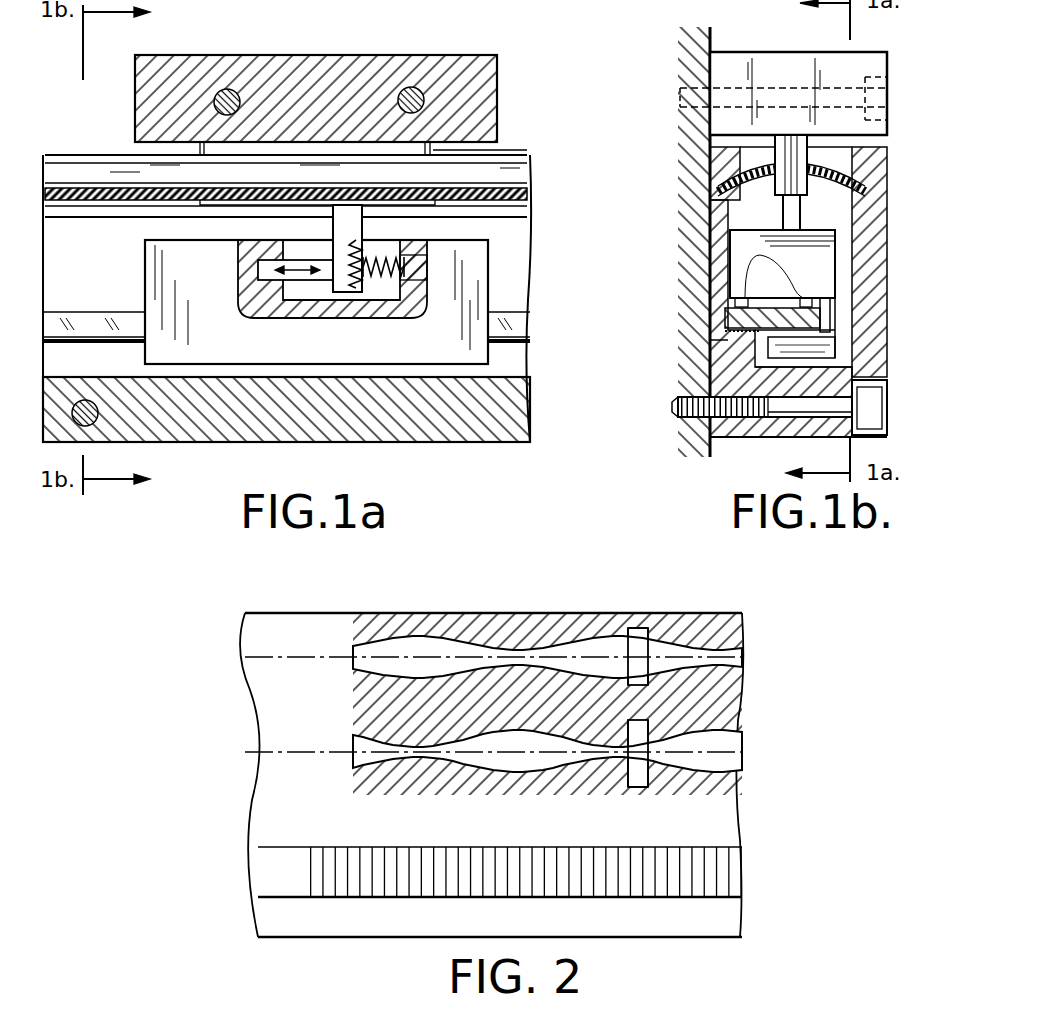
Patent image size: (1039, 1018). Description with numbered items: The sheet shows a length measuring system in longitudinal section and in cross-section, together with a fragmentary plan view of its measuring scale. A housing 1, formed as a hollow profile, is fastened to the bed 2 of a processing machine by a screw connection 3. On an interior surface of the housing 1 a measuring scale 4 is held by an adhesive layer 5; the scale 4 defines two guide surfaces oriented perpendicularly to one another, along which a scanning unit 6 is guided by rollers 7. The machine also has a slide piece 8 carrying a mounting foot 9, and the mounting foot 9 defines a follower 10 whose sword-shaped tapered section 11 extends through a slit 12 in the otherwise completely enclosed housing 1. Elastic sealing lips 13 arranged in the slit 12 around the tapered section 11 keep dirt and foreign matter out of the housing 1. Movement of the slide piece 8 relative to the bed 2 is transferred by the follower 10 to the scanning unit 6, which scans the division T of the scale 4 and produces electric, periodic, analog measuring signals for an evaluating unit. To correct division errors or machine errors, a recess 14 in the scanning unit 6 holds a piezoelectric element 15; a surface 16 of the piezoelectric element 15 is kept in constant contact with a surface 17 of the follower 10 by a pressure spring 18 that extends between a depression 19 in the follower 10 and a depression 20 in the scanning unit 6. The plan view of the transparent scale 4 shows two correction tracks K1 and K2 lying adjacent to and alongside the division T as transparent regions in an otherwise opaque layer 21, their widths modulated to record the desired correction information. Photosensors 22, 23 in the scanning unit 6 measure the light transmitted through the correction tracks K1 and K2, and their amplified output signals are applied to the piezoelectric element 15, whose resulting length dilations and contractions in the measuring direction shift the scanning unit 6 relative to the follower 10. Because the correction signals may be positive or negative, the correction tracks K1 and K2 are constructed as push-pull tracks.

In FIG. 1A, the housing 1 is at (525, 413).
In FIG. 1B, the housing 1 is at (720, 358).
In FIG. 1B, the bed 2 is at (695, 400).
In FIG. 1A, the screw connection 3 is at (90, 426).
In FIG. 1B, the screw connection 3 is at (875, 408).
In FIG. 1A, the measuring scale 4 is at (520, 322).
In FIG. 1B, the measuring scale 4 is at (725, 318).
In FIG. 2, the measuring scale 4 is at (720, 920).
In FIG. 1A, the adhesive layer 5 is at (520, 345).
In FIG. 1B, the adhesive layer 5 is at (735, 338).
In FIG. 1A, the scanning unit 6 is at (480, 255).
In FIG. 1B, the scanning unit 6 is at (835, 250).
In FIG. 1B, the rollers 7 is at (735, 262).
In FIG. 1B, the slide piece 8 is at (697, 58).
In FIG. 1A, the mounting foot 9 is at (485, 100).
In FIG. 1B, the mounting foot 9 is at (842, 115).
In FIG. 1A, the follower 10 is at (350, 224).
In FIG. 1B, the follower 10 is at (795, 215).
In FIG. 1A, the tapered section 11 is at (440, 150).
In FIG. 1B, the tapered section 11 is at (778, 175).
In FIG. 1B, the slit 12 is at (748, 157).
In FIG. 1A, the elastic sealing lips 13 is at (520, 194).
In FIG. 1B, the elastic sealing lips 13 is at (718, 190).
In FIG. 1A, the recess 14 is at (262, 270).
In FIG. 1A, the piezoelectric element 15 is at (268, 318).
In FIG. 1A, the surface of the piezoelectric element 16 is at (340, 300).
In FIG. 1A, the surface of the follower 17 is at (345, 282).
In FIG. 1A, the pressure spring 18 is at (395, 275).
In FIG. 1A, the depression in the follower 19 is at (368, 275).
In FIG. 1A, the depression in the scanning unit 20 is at (410, 262).
In FIG. 2, the opaque layer 21 is at (740, 712).
In FIG. 2, the photosensor 22 is at (638, 628).
In FIG. 2, the photosensor 23 is at (640, 787).
In FIG. 2, the correction track K1 is at (740, 660).
In FIG. 2, the correction track K2 is at (740, 752).
In FIG. 2, the division T is at (715, 868).